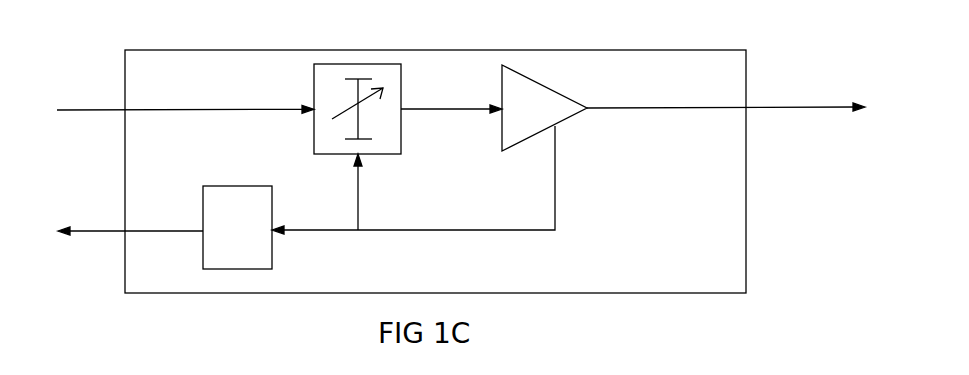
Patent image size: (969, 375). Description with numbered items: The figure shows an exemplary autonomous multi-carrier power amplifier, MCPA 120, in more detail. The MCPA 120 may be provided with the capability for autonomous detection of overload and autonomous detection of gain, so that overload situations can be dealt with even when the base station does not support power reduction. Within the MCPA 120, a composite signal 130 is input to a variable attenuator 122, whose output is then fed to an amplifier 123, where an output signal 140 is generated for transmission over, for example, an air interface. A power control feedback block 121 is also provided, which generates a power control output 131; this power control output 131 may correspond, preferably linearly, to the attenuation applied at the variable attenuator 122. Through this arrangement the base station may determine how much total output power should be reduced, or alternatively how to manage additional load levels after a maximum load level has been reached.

The MCPA 120 is at (605, 50).
The power control feedback block 121 is at (272, 260).
The variable attenuator 122 is at (401, 90).
The amplifier 123 is at (553, 90).
The composite signal 130 is at (61, 110).
The power control output 131 is at (108, 232).
The output signal 140 is at (785, 107).